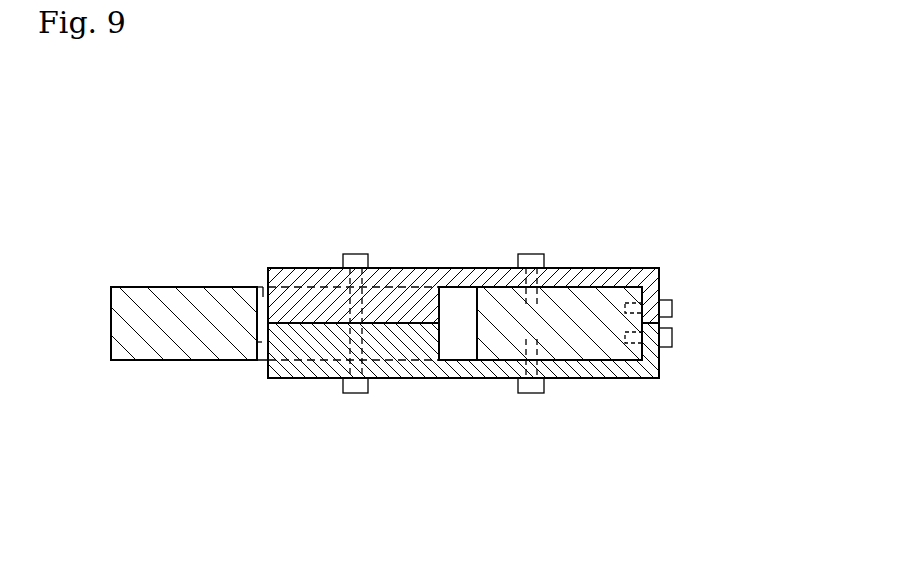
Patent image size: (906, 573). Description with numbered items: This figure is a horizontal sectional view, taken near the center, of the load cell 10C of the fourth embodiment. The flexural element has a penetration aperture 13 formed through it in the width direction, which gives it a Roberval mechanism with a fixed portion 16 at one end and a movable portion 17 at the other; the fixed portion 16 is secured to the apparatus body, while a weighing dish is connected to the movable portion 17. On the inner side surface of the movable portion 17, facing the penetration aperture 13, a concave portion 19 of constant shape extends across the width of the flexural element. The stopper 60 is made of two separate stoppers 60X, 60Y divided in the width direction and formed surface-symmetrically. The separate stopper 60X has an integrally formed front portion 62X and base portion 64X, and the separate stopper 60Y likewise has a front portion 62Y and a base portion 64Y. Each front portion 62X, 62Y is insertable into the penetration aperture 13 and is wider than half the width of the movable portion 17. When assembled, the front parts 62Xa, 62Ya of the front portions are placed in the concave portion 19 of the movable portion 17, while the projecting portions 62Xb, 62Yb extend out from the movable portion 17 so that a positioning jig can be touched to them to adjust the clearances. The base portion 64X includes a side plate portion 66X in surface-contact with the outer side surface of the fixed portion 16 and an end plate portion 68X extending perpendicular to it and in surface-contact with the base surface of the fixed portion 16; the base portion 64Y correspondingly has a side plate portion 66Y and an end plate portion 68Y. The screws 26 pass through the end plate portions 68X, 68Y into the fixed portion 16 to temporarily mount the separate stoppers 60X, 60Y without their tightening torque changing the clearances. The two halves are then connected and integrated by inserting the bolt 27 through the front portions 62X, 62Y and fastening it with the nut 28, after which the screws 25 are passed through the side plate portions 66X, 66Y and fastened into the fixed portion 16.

The movable portion 17 is at (160, 312).
The concave portion 19 is at (263, 290).
The load cell 10C is at (566, 238).
The front portion 62Y is at (293, 253).
The front part 62Ya is at (256, 312).
The projecting portion 62Yb is at (282, 272).
The front portion 62X is at (301, 389).
The front part 62Xa is at (257, 342).
The projecting portion 62Xb is at (318, 367).
The base portion 64Y is at (609, 278).
The side plate portion 66Y is at (610, 276).
The end plate portion 68Y is at (655, 292).
The base portion 64X is at (608, 373).
The side plate portion 66X is at (622, 376).
The end plate portion 68X is at (655, 358).
The fixed portion 16 is at (567, 303).
The penetration aperture 13 is at (457, 303).
The stopper 60 is at (463, 241).
The separate stopper 60Y is at (397, 260).
The separate stopper 60X is at (416, 313).
The nut 28 is at (357, 254).
The bolt 27 is at (355, 393).
The screw 25 is at (530, 254).
The screw 26 is at (673, 338).